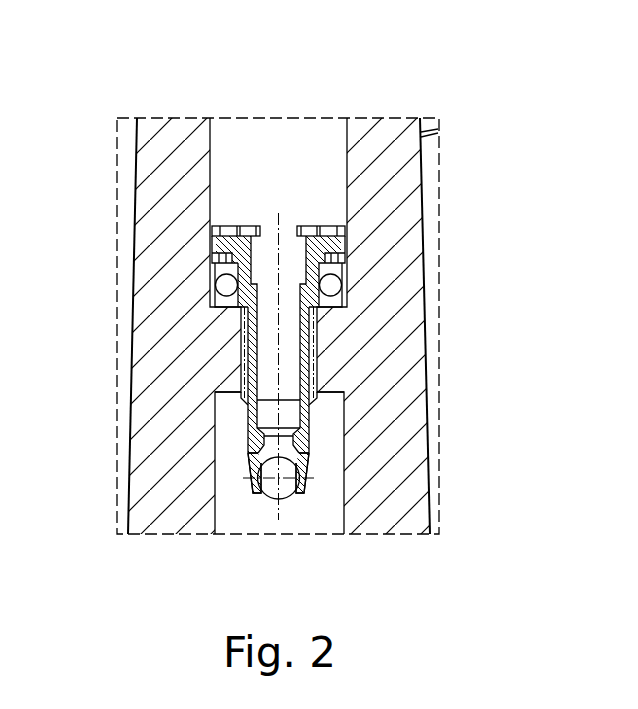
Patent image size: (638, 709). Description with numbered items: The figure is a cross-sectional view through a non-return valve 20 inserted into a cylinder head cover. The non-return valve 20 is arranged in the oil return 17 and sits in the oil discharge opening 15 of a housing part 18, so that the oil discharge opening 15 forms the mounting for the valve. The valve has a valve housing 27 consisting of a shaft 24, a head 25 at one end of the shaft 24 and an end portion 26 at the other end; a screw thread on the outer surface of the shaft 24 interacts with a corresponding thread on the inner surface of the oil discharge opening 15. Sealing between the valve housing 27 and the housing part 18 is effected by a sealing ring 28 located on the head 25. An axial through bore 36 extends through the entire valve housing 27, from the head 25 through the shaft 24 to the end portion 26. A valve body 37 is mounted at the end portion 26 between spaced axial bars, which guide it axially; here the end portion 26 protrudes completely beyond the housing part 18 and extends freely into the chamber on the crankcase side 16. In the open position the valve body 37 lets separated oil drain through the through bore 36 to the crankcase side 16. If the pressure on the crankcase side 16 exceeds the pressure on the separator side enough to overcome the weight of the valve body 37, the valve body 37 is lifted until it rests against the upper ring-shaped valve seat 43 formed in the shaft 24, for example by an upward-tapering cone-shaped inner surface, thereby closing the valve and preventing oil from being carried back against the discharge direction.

The housing part 18 is at (320, 308).
The non-return valve 20 is at (342, 325).
The head 25 is at (330, 250).
The sealing ring 28 is at (337, 292).
The oil discharge opening 15 is at (315, 345).
The oil return 17 is at (288, 377).
The through bore 36 is at (270, 353).
The shaft 24 is at (243, 372).
The valve housing 27 is at (240, 321).
The valve seat 43 is at (247, 447).
The valve body 37 is at (285, 488).
The end portion 26 is at (321, 489).
The crankcase side 16 is at (233, 496).